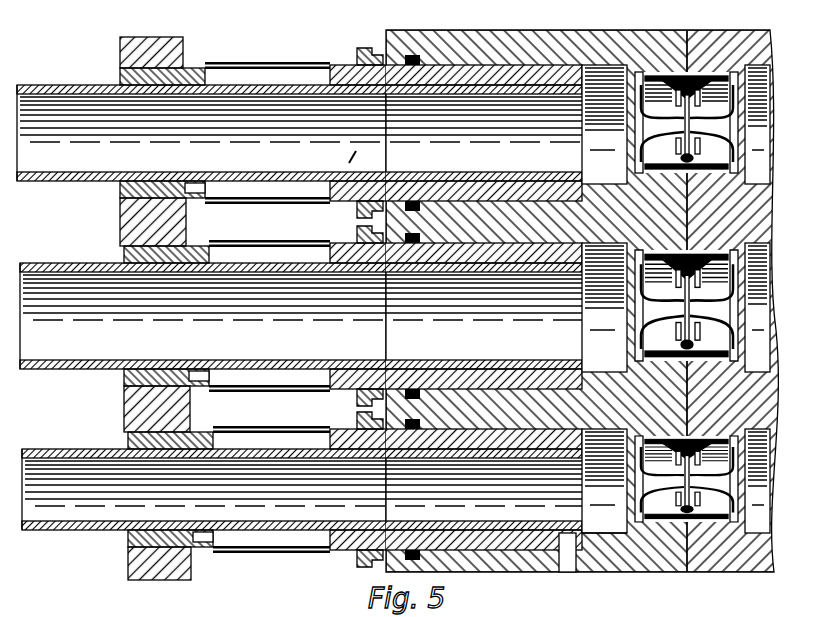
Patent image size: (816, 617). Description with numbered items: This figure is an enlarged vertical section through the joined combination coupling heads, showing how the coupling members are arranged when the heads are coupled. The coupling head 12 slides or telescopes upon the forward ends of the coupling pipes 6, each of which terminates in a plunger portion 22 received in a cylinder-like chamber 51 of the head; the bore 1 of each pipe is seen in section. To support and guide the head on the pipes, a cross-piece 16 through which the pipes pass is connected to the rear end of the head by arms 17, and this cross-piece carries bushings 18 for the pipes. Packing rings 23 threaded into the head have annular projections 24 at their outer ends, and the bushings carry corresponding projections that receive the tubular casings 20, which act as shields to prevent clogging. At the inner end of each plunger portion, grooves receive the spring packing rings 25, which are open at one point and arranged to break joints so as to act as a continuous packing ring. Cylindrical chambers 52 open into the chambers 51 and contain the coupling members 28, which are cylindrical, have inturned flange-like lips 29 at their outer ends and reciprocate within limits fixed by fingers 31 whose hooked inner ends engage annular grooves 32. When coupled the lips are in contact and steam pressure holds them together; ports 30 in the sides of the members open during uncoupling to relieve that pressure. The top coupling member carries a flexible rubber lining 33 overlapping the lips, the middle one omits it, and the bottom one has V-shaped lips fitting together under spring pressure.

The bore 1 is at (349, 159).
The coupling pipe 6 is at (94, 86).
The coupling head 12 is at (515, 572).
The cross-piece 16 is at (147, 580).
The arm 17 is at (205, 545).
The bushing 18 is at (128, 541).
The tubular casing 20 is at (267, 548).
The plunger portion 22 is at (494, 533).
The packing ring 23 is at (382, 552).
The annular projection 24 is at (356, 552).
The spring packing ring 25 is at (565, 572).
The coupling member 28 is at (671, 76).
The lip 29 is at (695, 354).
The port 30 is at (683, 341).
The finger 31 is at (645, 337).
The annular groove 32 is at (592, 299).
The flexible lining 33 is at (713, 77).
The cylinder-like chamber 51 is at (617, 524).
The cylindrical chamber 52 is at (640, 519).